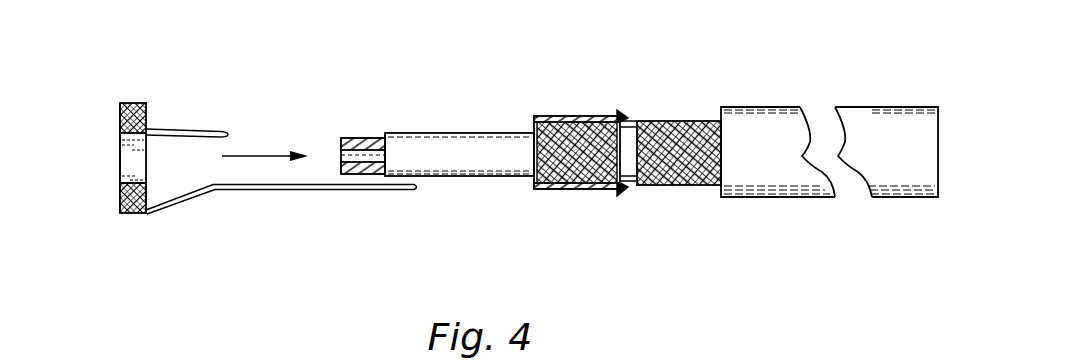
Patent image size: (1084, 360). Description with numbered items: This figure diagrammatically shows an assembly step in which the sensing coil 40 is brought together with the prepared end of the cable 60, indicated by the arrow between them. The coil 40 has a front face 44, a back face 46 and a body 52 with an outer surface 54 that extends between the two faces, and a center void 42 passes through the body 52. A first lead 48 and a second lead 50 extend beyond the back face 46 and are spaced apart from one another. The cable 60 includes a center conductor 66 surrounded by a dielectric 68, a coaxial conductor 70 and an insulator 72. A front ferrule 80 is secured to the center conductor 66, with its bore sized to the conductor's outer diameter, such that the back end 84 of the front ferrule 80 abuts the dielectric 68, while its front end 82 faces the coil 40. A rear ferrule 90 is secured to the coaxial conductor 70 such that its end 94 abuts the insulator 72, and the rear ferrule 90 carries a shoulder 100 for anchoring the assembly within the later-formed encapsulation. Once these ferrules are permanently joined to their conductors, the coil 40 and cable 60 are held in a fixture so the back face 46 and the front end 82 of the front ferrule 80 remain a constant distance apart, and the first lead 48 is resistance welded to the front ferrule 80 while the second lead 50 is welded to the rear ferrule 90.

The sensing coil 40 is at (136, 92).
The center void 42 is at (128, 158).
The front face 44 is at (120, 107).
The back face 46 is at (139, 103).
The first lead 48 is at (205, 133).
The second lead 50 is at (260, 190).
The body 52 is at (118, 212).
The outer surface 54 is at (140, 213).
The cable 60 is at (792, 71).
The center conductor 66 is at (367, 157).
The dielectric 68 is at (478, 163).
The coaxial conductor 70 is at (580, 178).
The insulator 72 is at (627, 189).
The front ferrule 80 is at (366, 122).
The front end 82 is at (342, 142).
The back end 84 is at (376, 140).
The rear ferrule 90 is at (565, 88).
The end 94 is at (628, 118).
The shoulder 100 is at (622, 120).